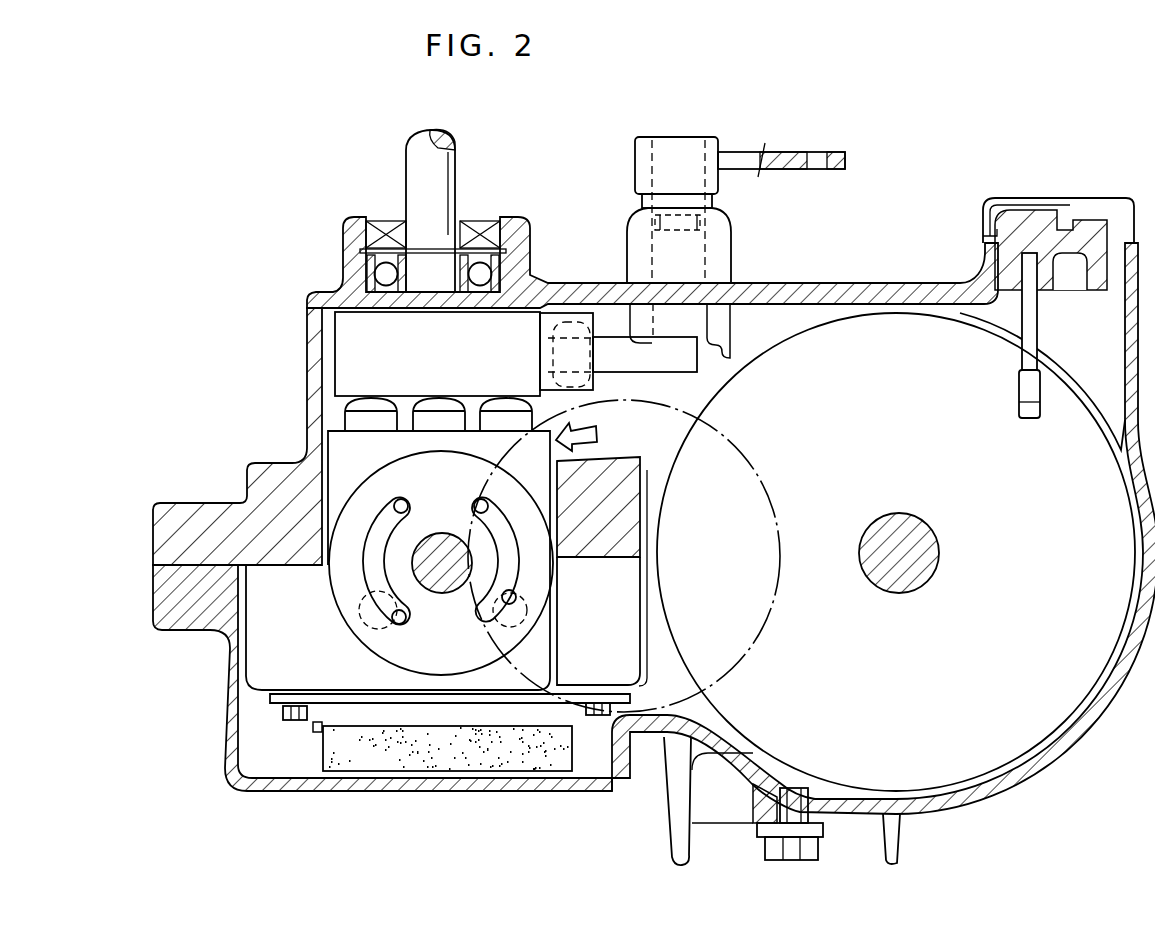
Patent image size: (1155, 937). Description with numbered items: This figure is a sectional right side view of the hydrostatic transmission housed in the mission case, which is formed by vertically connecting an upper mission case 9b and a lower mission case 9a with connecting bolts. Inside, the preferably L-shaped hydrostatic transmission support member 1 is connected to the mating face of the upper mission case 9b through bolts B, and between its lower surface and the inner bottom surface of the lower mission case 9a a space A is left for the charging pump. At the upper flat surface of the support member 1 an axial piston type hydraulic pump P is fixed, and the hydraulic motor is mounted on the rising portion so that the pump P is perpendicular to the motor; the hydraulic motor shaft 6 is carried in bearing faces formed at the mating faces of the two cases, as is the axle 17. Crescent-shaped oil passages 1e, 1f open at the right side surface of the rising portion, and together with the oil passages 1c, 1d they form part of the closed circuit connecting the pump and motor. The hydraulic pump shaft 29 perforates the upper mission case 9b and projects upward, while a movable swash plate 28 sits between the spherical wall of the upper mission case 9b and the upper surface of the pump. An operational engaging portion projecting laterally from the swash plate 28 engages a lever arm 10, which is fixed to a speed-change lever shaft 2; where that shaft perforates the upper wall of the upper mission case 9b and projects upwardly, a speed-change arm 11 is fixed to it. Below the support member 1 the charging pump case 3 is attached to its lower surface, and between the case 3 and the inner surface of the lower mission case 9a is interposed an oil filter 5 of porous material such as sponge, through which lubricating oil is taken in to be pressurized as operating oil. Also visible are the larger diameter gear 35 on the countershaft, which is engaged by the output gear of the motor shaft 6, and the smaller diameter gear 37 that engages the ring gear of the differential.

The hydrostatic transmission support member 1 is at (640, 668).
The oil passage 1c is at (510, 590).
The oil passage 1d is at (400, 625).
The crescent-shaped oil passage 1e is at (476, 500).
The crescent-shaped oil passage 1f is at (400, 468).
The speed-change lever shaft 2 is at (707, 250).
The charging pump case 3 is at (314, 721).
The oil filter 5 is at (388, 767).
The hydraulic motor shaft 6 is at (436, 593).
The lower mission case 9a is at (226, 742).
The upper mission case 9b is at (908, 283).
The lever arm 10 is at (653, 373).
The speed-change arm 11 is at (784, 152).
The axle 17 is at (906, 513).
The movable swash plate 28 is at (425, 366).
The hydraulic pump shaft 29 is at (455, 172).
The larger diameter gear 35 is at (777, 506).
The smaller diameter gear 37 is at (786, 344).
The space A is at (276, 750).
The bolt B is at (600, 712).
The hydraulic pump P is at (588, 433).